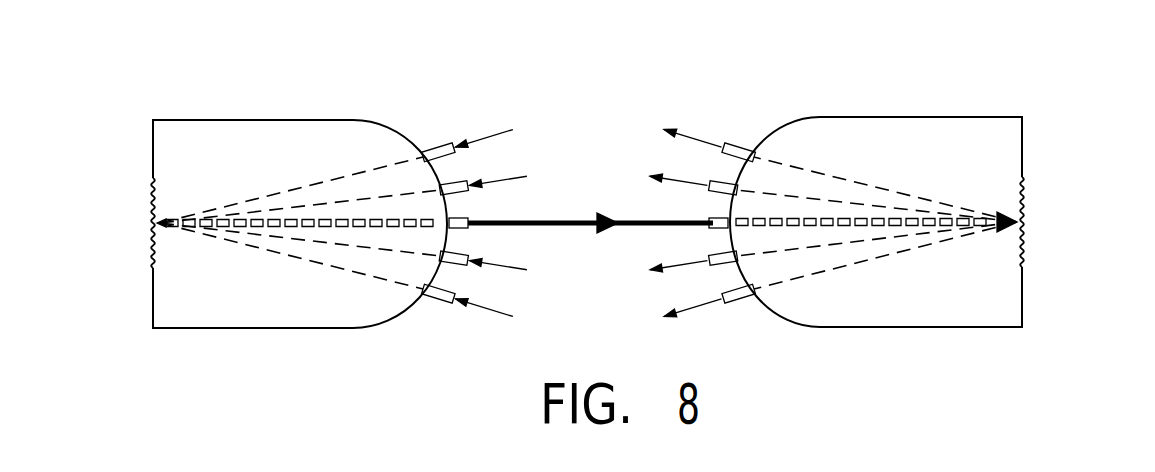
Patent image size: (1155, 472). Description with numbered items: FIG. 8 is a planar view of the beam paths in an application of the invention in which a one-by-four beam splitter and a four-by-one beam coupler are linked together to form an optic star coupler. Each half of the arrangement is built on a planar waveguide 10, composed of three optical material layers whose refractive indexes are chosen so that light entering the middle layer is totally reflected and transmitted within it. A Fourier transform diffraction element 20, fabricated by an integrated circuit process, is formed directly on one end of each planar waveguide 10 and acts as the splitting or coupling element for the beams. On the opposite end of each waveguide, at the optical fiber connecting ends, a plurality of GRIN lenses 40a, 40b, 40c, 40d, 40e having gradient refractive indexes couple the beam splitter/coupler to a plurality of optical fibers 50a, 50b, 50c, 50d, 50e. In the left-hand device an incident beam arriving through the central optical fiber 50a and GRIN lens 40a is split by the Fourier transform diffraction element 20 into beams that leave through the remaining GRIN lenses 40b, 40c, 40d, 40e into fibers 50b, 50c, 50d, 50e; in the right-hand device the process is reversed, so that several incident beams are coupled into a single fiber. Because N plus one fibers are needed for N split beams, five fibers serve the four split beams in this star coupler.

The planar waveguide 10 is at (272, 130).
The Fourier transform diffraction element 20 is at (152, 212).
The GRIN lens 40a is at (463, 218).
The GRIN lens 40b is at (437, 144).
The GRIN lens 40c is at (453, 184).
The GRIN lens 40d is at (453, 257).
The GRIN lens 40e is at (440, 292).
The optical fiber 50a is at (562, 221).
The optical fiber 50b is at (486, 134).
The optical fiber 50c is at (503, 179).
The optical fiber 50d is at (512, 266).
The optical fiber 50e is at (505, 308).